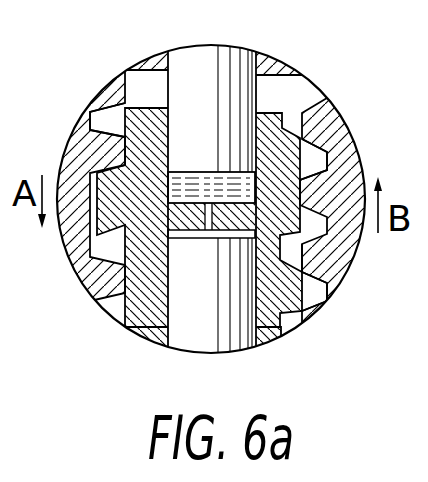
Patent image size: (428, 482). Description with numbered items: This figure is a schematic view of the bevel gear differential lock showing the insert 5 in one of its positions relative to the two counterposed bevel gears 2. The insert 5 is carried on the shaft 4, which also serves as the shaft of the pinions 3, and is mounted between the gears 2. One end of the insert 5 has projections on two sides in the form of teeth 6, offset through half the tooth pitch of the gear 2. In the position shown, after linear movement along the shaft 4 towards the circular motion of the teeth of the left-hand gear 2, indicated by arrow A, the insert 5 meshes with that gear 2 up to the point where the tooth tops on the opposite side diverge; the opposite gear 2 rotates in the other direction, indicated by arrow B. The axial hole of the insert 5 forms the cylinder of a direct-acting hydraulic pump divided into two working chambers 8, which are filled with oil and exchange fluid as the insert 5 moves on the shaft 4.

The bevel gear 2 is at (78, 222).
The pinion 3 is at (143, 56).
The shaft 4 is at (182, 76).
The insert 5 is at (123, 100).
The teeth 6 is at (103, 172).
The working chamber 8 is at (200, 170).